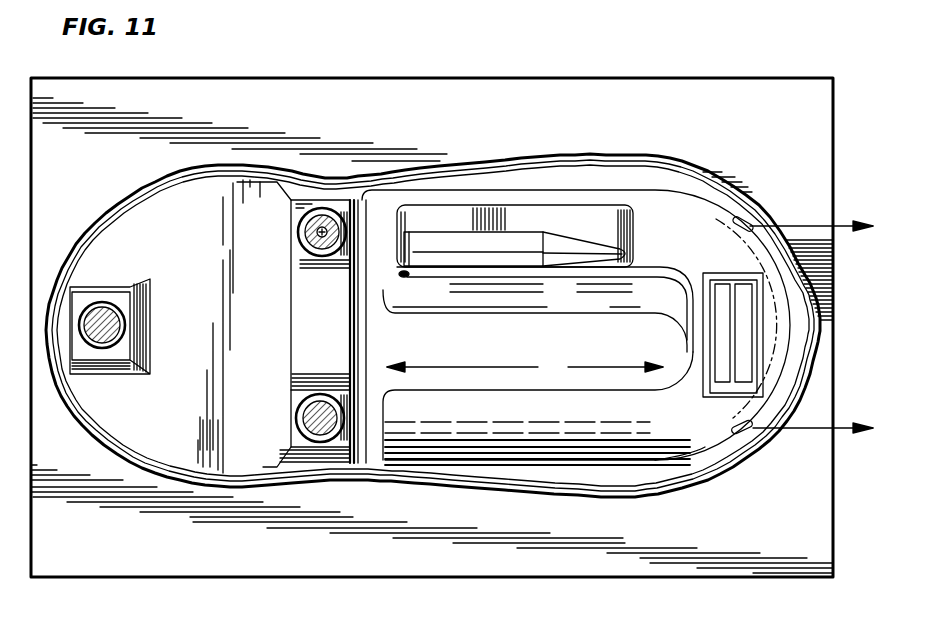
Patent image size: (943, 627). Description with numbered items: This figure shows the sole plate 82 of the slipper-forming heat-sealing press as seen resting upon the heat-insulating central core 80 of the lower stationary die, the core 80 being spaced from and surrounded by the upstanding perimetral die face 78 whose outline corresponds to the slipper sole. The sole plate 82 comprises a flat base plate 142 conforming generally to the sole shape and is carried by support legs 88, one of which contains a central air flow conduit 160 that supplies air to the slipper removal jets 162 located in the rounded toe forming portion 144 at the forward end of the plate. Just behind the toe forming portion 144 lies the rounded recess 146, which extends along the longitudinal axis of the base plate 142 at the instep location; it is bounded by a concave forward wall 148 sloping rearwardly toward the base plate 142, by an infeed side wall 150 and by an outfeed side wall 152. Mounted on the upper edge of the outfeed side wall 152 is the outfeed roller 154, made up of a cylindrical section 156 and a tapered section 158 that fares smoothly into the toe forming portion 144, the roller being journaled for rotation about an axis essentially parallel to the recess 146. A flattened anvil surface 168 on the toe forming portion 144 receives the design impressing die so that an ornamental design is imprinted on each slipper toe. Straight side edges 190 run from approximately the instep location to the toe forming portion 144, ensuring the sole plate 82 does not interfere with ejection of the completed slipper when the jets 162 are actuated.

The perimetral die face 78 is at (583, 169).
The heat-insulating central core 80 is at (631, 145).
The sole plate 82 is at (681, 231).
The legs 88 is at (299, 224).
The flat base plate 142 is at (181, 417).
The toe forming portion 144 is at (760, 264).
The rounded recess 146 is at (525, 368).
The concave forward wall 148 is at (698, 338).
The infeed side wall 150 is at (628, 425).
The outfeed side wall 152 is at (498, 313).
The outfeed roller 154 is at (392, 278).
The cylindrical section 156 is at (443, 244).
The tapered section 158 is at (568, 244).
The central air flow conduit 160 is at (318, 236).
The slipper removal jets 162 is at (748, 221).
The flattened anvil surface 168 is at (720, 273).
The straight side edges 190 is at (503, 188).